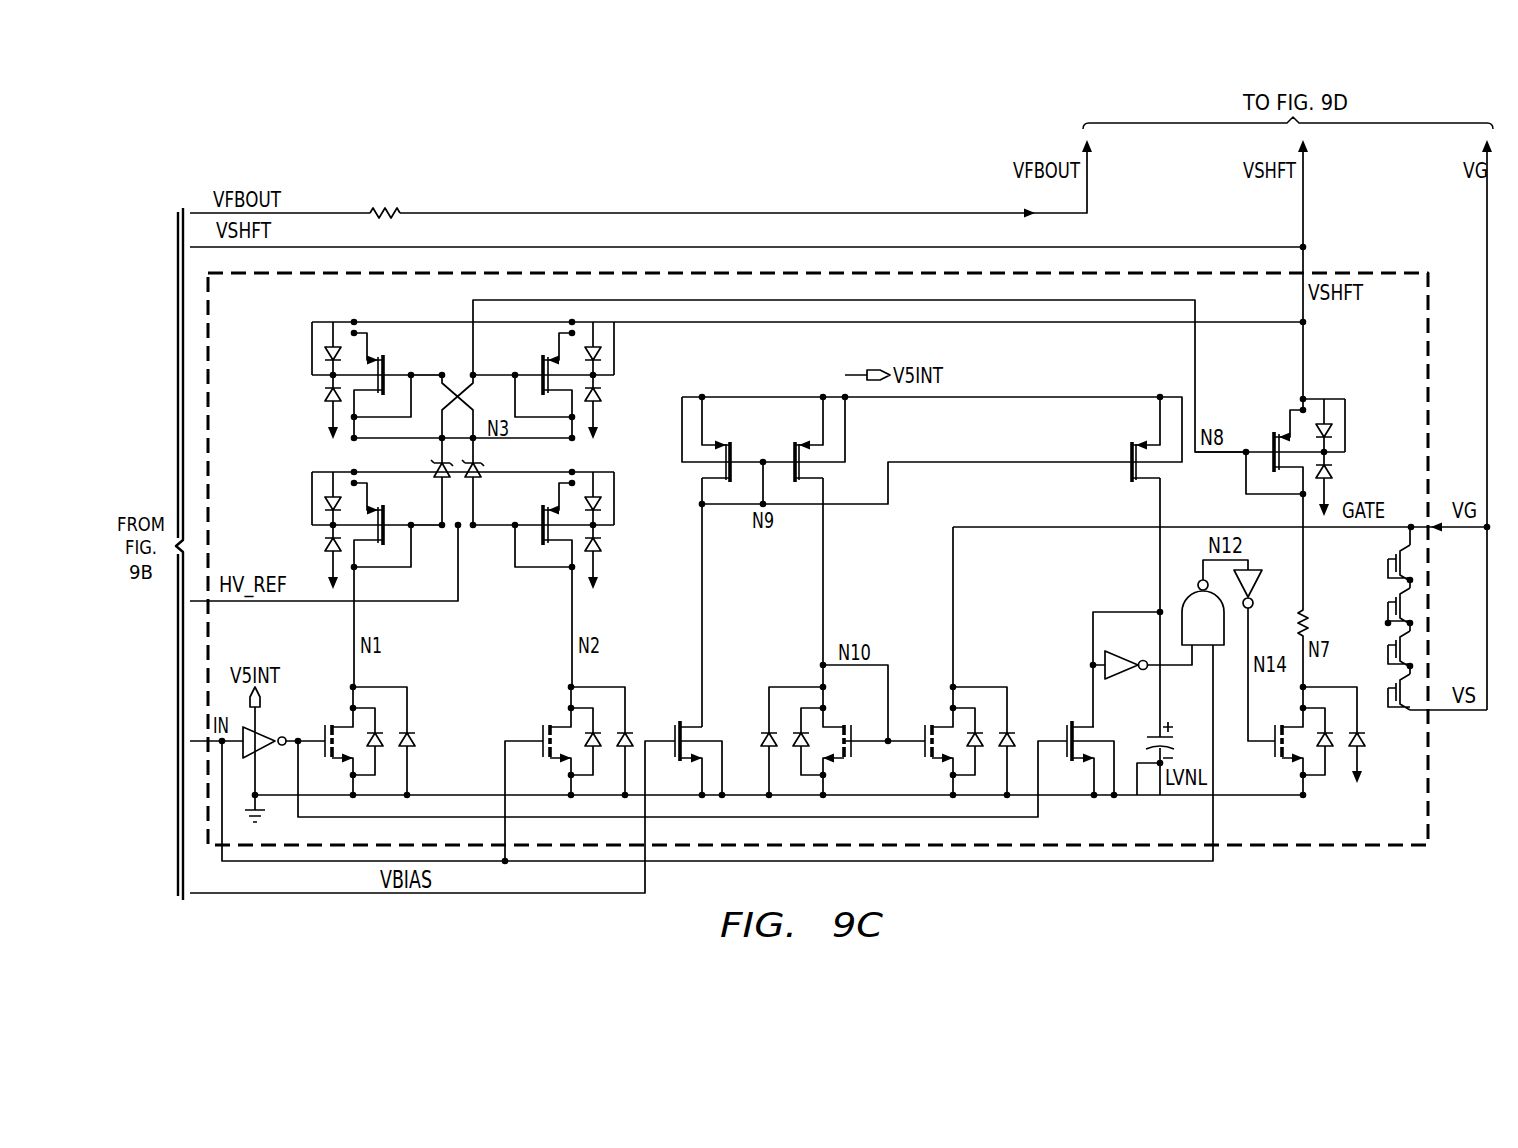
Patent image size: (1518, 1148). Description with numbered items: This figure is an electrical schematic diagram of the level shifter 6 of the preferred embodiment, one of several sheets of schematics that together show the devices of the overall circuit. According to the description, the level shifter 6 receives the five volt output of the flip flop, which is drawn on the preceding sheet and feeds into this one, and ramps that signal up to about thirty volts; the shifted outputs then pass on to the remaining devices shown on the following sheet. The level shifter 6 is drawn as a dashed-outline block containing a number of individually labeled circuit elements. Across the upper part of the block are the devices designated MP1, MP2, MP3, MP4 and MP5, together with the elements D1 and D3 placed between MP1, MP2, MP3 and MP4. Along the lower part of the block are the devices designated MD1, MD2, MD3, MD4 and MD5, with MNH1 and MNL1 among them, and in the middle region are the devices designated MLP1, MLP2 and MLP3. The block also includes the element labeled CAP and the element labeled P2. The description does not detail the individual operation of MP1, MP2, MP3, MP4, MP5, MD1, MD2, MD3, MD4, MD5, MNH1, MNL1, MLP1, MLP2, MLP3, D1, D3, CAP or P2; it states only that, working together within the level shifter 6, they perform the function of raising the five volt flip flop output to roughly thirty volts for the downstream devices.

The level shifter 6 is at (1366, 273).
The PMOS transistor MP1 is at (377, 379).
The PMOS transistor MP2 is at (543, 379).
The PMOS transistor MP3 is at (377, 529).
The PMOS transistor MP4 is at (543, 529).
The PMOS transistor MP5 is at (1270, 456).
The depletion NMOS transistor MD1 is at (363, 741).
The depletion NMOS transistor MD2 is at (579, 741).
The depletion NMOS transistor MD3 is at (1310, 741).
The depletion NMOS transistor MD4 is at (960, 662).
The depletion NMOS transistor MD5 is at (815, 741).
The NMOS transistor MNH1 is at (686, 651).
The NMOS transistor MNL1 is at (1100, 705).
The PMOS transistor MLP1 is at (728, 438).
The PMOS transistor MLP2 is at (1119, 438).
The PMOS transistor MLP3 is at (798, 540).
The zener diode D1 is at (431, 483).
The zener diode D3 is at (487, 483).
The capacitor CAP is at (1169, 703).
The resistor P2 is at (638, 185).